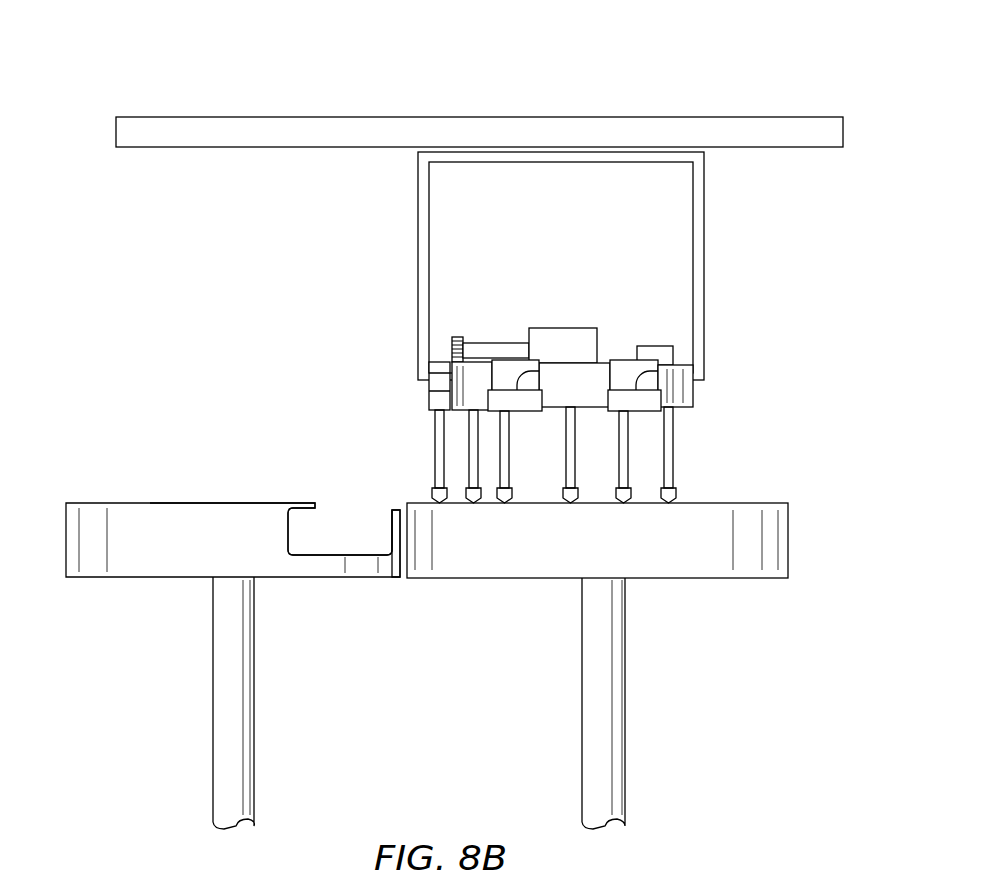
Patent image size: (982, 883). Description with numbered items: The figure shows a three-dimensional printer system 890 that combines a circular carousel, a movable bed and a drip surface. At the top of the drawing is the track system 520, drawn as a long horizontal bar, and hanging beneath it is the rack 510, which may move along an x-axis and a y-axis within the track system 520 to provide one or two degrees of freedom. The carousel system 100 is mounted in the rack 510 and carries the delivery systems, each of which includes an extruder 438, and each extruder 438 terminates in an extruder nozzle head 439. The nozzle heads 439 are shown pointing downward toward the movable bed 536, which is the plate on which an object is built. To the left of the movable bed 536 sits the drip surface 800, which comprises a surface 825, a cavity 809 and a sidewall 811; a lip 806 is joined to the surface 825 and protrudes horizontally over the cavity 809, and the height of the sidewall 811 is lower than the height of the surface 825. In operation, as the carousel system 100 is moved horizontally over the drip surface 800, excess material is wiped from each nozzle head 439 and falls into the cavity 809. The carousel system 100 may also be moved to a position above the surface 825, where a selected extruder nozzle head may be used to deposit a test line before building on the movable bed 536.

The 3D printer system 890 is at (566, 93).
The track system 520 is at (318, 128).
The rack 510 is at (705, 275).
The carousel system 100 is at (563, 298).
The extruder 438 is at (432, 415).
The extruder nozzle head 439 is at (433, 490).
The drip surface 800 is at (214, 552).
The surface 825 is at (215, 503).
The lip 806 is at (308, 503).
The cavity 809 is at (336, 543).
The sidewall 811 is at (392, 510).
The movable bed 536 is at (621, 553).